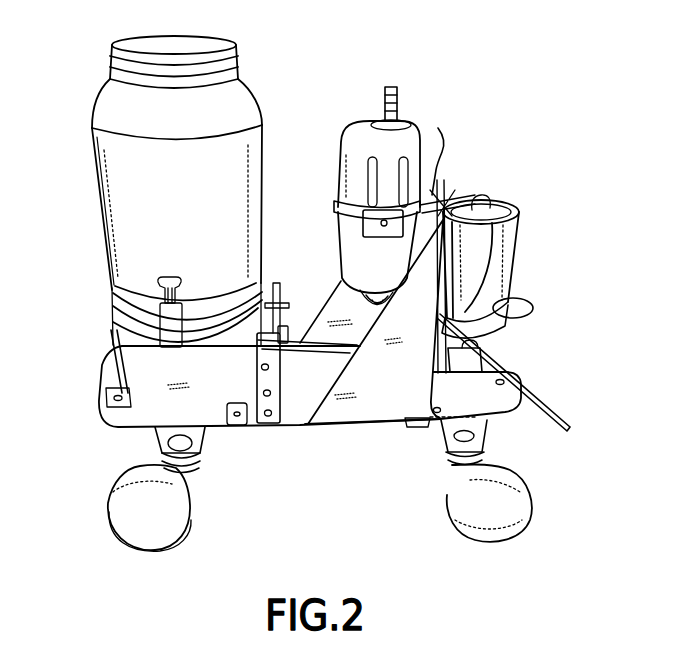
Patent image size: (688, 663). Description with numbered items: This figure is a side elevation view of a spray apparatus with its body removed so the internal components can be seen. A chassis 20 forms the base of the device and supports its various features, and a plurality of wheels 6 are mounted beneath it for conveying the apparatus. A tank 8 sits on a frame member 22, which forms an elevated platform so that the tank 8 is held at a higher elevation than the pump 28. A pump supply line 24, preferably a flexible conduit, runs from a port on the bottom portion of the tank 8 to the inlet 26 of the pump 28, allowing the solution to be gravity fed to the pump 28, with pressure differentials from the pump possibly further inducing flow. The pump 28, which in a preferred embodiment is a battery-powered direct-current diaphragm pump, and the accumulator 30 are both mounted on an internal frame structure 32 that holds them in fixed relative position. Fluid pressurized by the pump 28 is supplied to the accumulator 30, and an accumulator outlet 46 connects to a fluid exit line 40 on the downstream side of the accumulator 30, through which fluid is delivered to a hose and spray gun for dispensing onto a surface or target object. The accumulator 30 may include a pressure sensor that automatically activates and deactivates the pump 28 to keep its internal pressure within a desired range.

The wheels 6 is at (190, 512).
The tank 8 is at (118, 182).
The chassis 20 is at (512, 409).
The frame member 22 is at (112, 344).
The pump supply line 24 is at (308, 424).
The inlet 26 is at (493, 372).
The pump 28 is at (500, 334).
The accumulator 30 is at (412, 156).
The internal frame structure 32 is at (378, 402).
The fluid exit line 40 is at (545, 386).
The accumulator outlet 46 is at (342, 307).